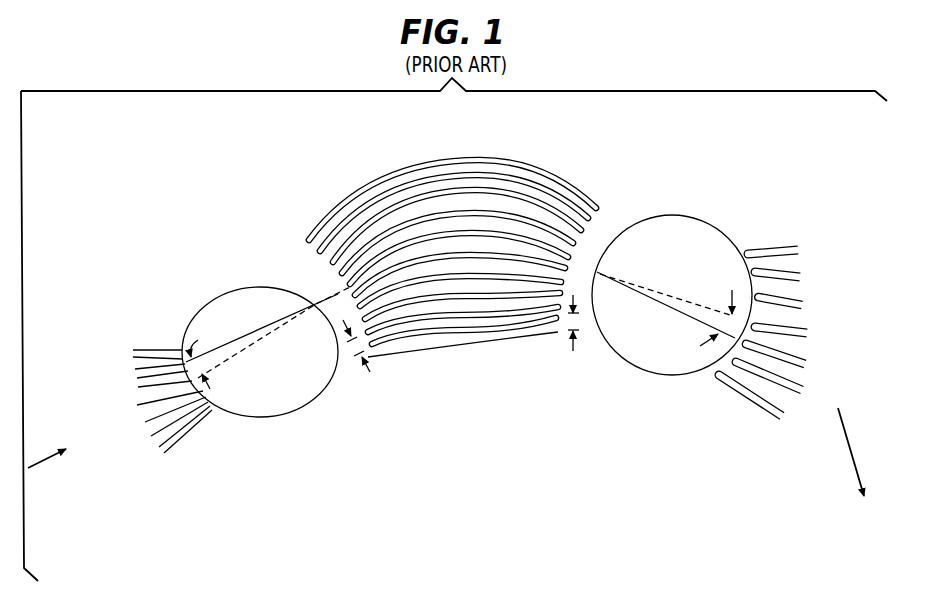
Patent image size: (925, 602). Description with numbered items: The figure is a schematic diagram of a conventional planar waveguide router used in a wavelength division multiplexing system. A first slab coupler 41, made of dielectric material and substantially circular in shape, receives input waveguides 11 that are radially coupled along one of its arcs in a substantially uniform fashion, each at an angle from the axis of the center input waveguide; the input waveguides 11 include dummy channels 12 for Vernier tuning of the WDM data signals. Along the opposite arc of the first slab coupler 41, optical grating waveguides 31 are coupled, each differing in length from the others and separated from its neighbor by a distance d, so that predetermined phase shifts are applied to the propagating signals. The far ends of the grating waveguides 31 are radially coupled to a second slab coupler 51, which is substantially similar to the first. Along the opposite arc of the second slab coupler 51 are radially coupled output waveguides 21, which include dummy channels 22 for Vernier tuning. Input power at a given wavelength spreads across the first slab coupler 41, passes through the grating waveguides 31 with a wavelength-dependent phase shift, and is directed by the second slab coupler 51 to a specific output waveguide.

The input waveguides 11 is at (80, 368).
The dummy channels 12 is at (130, 349).
The output waveguides 21 is at (845, 233).
The dummy channels 22 is at (807, 241).
The optical grating waveguides 31 is at (596, 150).
The first slab coupler 41 is at (240, 417).
The second slab coupler 51 is at (642, 372).